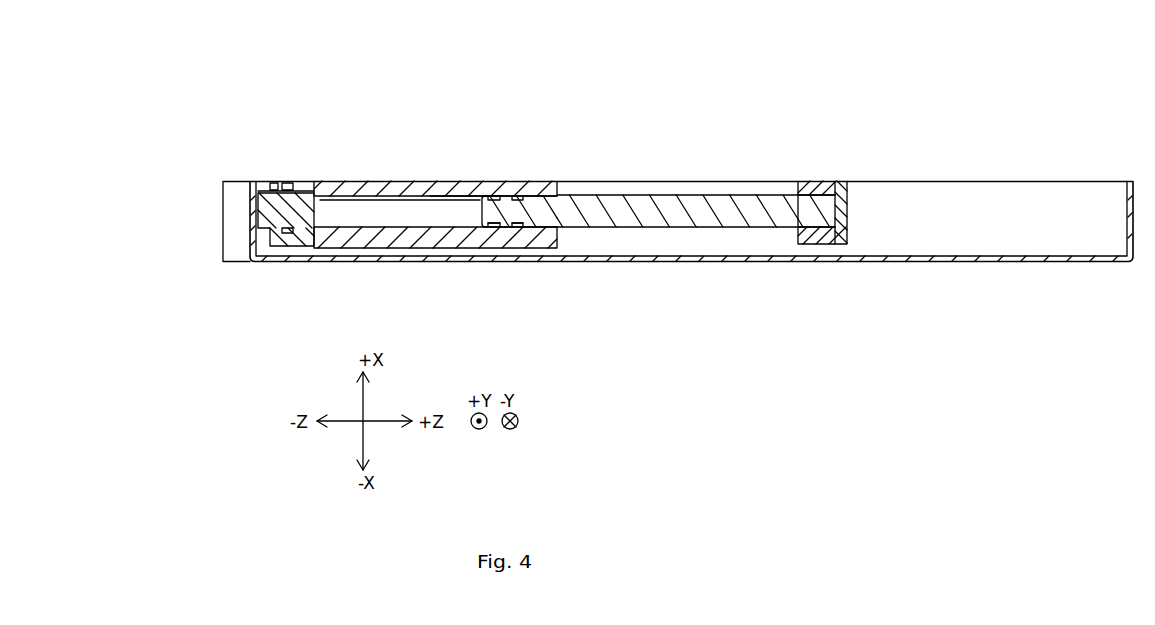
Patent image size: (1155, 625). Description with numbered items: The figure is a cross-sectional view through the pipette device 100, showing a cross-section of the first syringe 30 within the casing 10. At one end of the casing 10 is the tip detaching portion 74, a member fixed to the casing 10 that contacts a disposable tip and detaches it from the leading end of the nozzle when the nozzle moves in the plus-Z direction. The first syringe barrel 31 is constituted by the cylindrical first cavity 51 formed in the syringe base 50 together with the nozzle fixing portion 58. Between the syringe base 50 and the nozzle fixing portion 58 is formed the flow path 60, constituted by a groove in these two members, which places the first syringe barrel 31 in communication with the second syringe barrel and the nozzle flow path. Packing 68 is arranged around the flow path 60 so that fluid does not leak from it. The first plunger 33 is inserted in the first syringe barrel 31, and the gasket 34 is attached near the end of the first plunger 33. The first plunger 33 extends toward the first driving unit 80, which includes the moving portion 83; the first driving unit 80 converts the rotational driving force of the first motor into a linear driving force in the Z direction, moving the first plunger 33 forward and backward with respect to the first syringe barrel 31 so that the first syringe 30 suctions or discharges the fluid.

The pipette device 100 is at (716, 74).
The casing 10 is at (1013, 181).
The tip detaching portion 74 is at (232, 218).
The flow path 60 is at (314, 190).
The packing 68 is at (315, 248).
The nozzle fixing portion 58 is at (300, 183).
The syringe base 50 is at (403, 184).
The first cavity 51 is at (450, 184).
The first syringe barrel 31 is at (384, 210).
The first syringe 30 is at (484, 195).
The gasket 34 is at (500, 229).
The first plunger 33 is at (638, 195).
The first driving unit 80 is at (806, 181).
The moving portion 83 is at (838, 181).